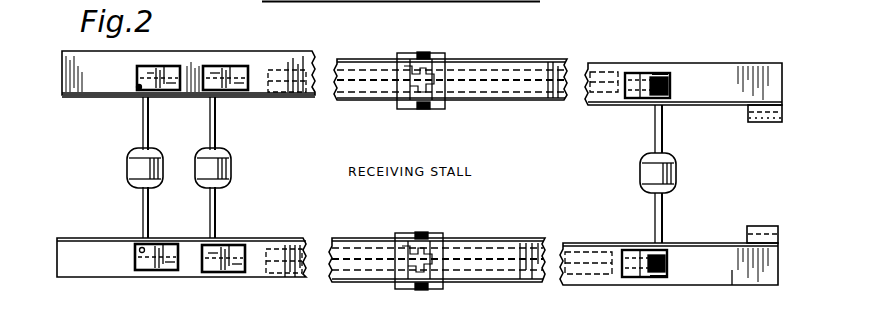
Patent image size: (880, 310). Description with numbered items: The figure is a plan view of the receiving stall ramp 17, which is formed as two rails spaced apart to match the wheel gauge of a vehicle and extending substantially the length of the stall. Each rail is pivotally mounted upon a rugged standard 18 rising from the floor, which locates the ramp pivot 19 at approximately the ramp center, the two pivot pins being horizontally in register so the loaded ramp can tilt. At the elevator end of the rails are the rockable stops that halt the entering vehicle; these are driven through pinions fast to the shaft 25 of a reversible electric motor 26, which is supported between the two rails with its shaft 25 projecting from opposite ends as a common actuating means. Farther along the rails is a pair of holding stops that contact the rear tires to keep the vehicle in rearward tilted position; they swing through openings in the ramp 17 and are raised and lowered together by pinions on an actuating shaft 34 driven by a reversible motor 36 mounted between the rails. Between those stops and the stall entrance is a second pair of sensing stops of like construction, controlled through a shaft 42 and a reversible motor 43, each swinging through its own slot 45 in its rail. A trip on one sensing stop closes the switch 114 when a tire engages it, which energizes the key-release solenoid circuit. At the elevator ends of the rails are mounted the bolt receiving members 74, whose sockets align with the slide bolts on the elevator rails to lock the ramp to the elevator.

The switch 114 is at (137, 88).
The shaft 42 is at (143, 106).
The reversible motor 43 is at (133, 170).
The reversible motor 36 is at (231, 170).
The actuating shaft 34 is at (216, 216).
The slot 45 is at (136, 264).
The ramp 17 is at (523, 92).
The standard 18 is at (400, 107).
The ramp pivot 19 is at (424, 109).
The shaft 25 is at (663, 138).
The reversible electric motor 26 is at (677, 174).
The bolt receiving member 74 is at (754, 123).